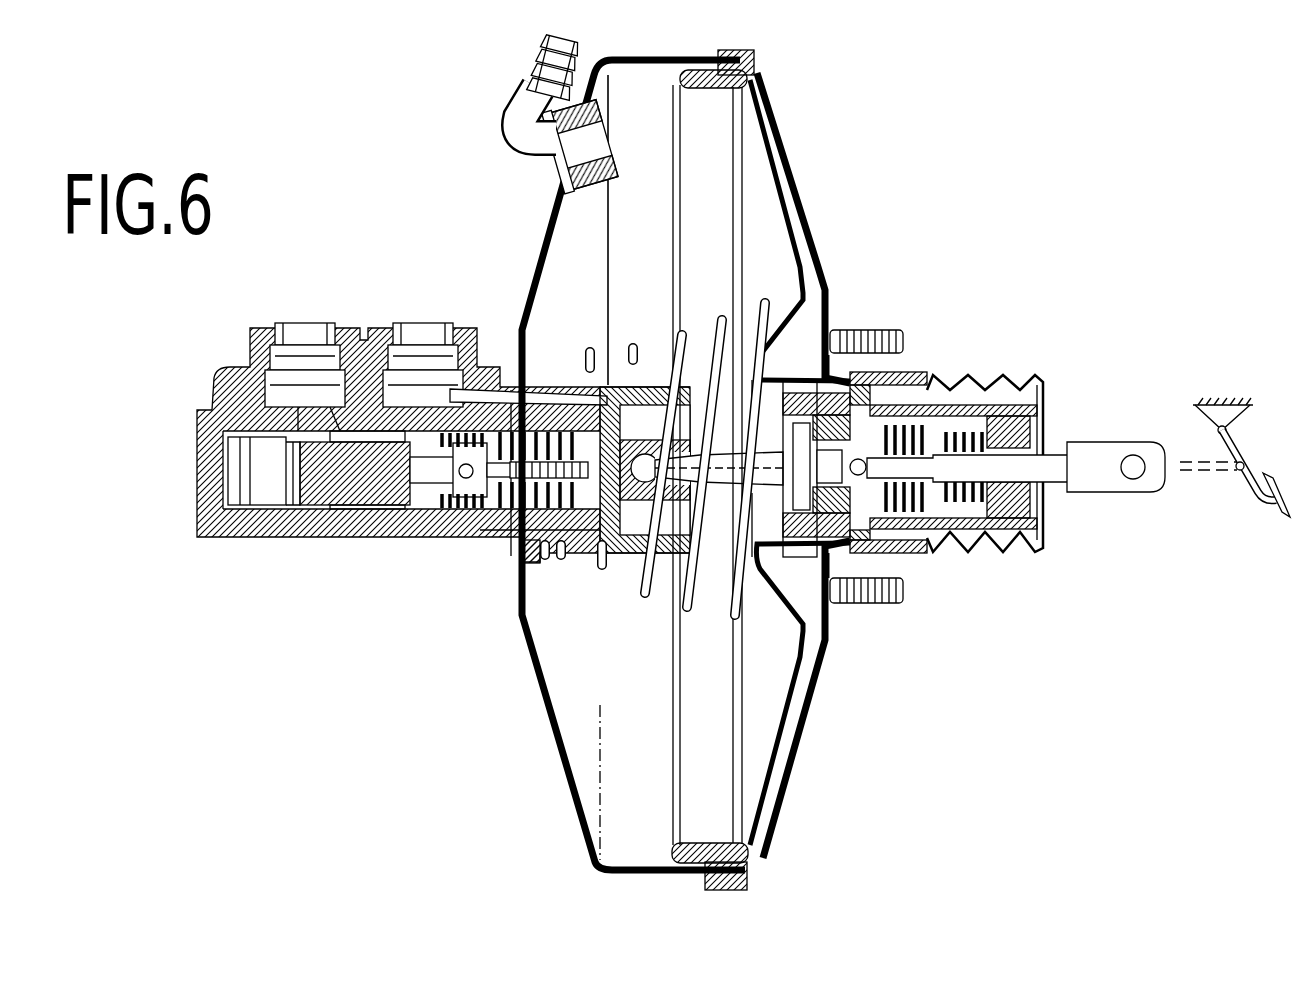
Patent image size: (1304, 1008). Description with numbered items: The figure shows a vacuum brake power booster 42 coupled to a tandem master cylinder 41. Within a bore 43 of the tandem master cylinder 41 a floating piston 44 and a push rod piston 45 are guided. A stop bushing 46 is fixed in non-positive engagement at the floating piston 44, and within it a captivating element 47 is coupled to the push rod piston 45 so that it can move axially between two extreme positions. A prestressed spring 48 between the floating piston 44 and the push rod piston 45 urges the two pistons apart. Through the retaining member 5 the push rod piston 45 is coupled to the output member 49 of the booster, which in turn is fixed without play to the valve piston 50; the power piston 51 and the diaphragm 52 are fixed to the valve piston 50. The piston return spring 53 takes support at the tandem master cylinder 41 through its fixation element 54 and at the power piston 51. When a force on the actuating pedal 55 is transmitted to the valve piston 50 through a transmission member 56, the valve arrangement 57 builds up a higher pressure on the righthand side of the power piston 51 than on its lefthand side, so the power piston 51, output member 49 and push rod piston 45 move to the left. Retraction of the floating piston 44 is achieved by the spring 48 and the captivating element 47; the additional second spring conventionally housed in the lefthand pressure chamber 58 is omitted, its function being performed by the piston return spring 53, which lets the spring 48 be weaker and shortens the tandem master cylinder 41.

The retaining member 5 is at (632, 382).
The tandem master cylinder 41 is at (213, 540).
The vacuum brake power booster 42 is at (600, 880).
The bore 43 is at (262, 505).
The floating piston 44 is at (360, 476).
The push rod piston 45 is at (587, 532).
The stop bushing 46 is at (486, 530).
The captivating element 47 is at (513, 550).
The spring 48 is at (515, 390).
The output member 49 is at (725, 490).
The valve piston 50 is at (852, 350).
The power piston 51 is at (768, 160).
The diaphragm 52 is at (790, 197).
The piston return spring 53 is at (595, 365).
The fixation element 54 is at (547, 327).
The actuating pedal 55 is at (1245, 490).
The transmission member 56 is at (1098, 452).
The valve arrangement 57 is at (975, 562).
The lefthand pressure chamber 58 is at (252, 464).